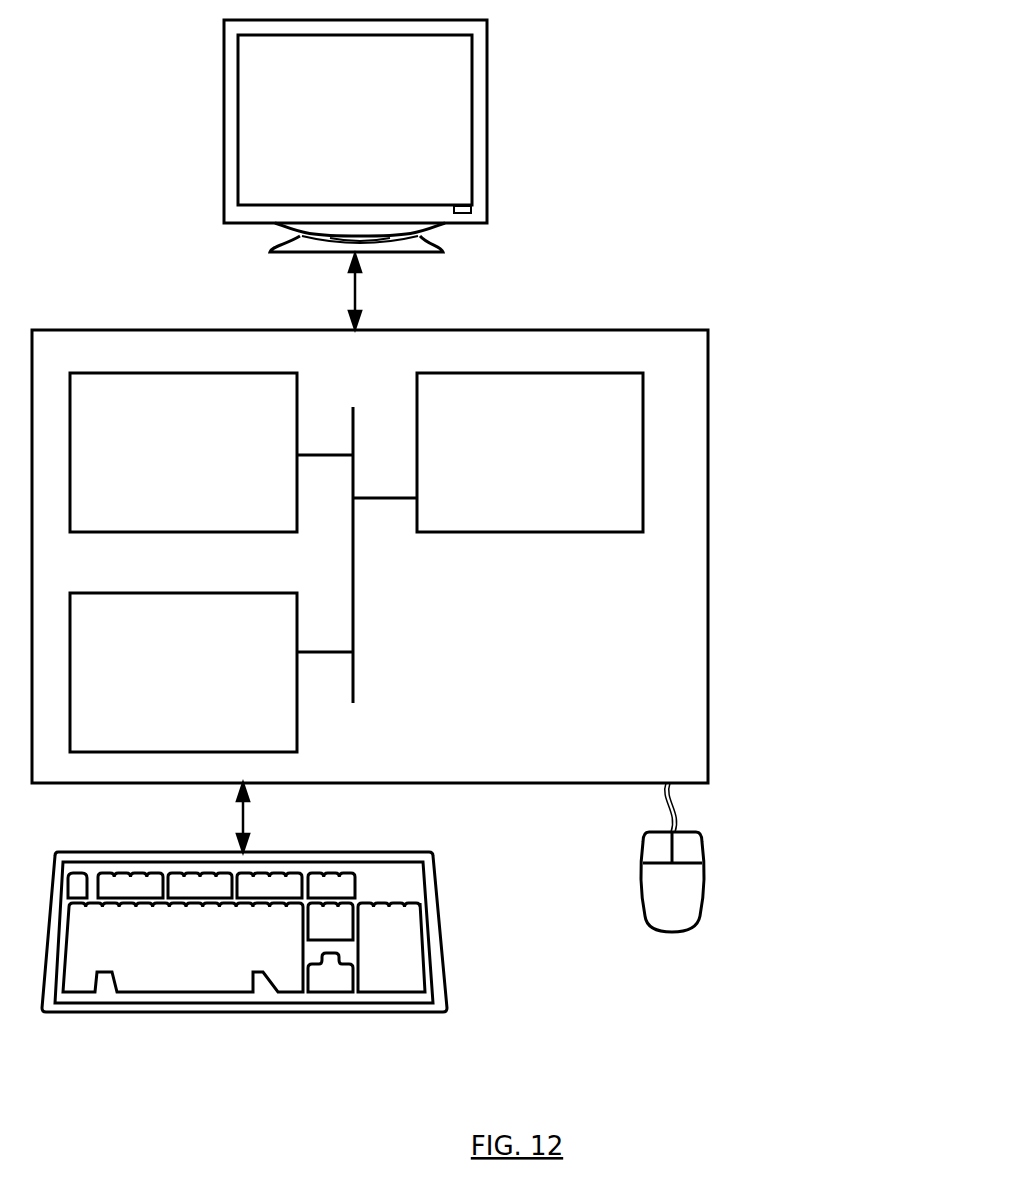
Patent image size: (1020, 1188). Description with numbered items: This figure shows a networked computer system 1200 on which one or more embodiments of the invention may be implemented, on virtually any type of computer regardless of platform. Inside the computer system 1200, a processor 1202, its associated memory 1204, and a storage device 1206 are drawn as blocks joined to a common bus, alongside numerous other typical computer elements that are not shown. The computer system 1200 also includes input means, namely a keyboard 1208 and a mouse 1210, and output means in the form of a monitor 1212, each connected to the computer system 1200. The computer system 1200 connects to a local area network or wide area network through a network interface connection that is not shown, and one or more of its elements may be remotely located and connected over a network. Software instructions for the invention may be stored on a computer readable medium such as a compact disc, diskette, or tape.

The networked computer system 1200 is at (758, 342).
The processor 1202 is at (530, 452).
The memory 1204 is at (183, 452).
The storage device 1206 is at (183, 672).
The keyboard 1208 is at (244, 932).
The mouse 1210 is at (705, 935).
The monitor 1212 is at (355, 136).